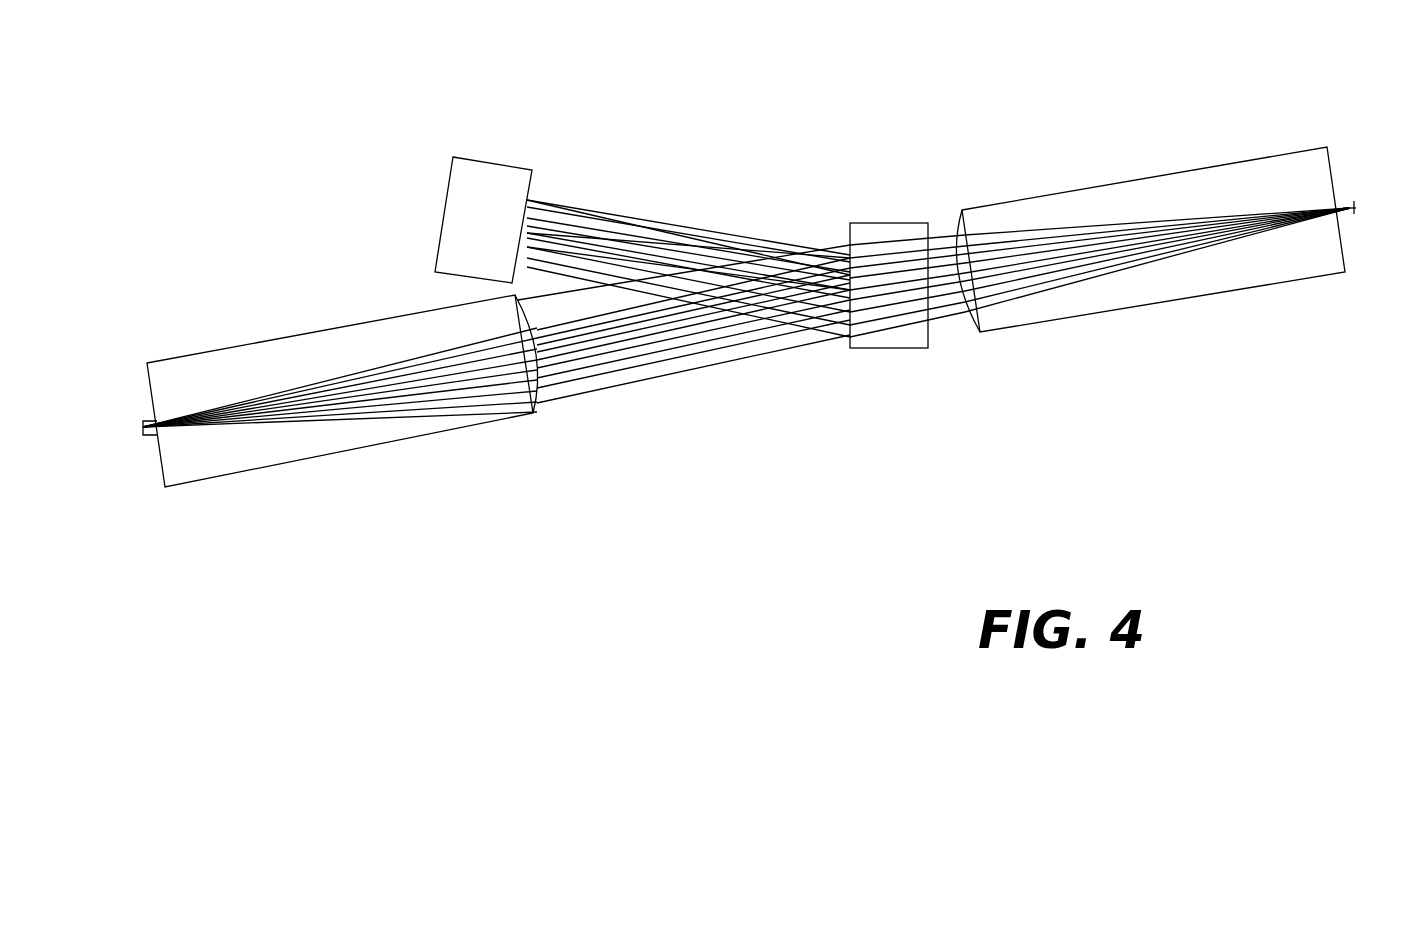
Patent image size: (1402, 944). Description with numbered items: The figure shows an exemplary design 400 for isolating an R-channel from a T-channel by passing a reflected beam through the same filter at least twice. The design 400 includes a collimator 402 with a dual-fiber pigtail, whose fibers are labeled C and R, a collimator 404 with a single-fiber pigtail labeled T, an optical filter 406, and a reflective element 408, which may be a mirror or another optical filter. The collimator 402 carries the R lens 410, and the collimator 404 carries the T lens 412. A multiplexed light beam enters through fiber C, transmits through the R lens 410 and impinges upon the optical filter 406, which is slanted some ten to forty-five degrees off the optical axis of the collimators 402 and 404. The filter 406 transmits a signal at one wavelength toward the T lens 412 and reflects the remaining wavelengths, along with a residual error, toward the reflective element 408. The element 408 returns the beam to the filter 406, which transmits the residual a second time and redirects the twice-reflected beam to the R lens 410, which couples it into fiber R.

The exemplary design 400 is at (747, 266).
The collimator with a dual-fiber pigtail 402 is at (340, 414).
The collimator with a single-fiber pigtail 404 is at (1153, 267).
The optical filter 406 is at (889, 275).
The reflective element 408 is at (454, 204).
The R lens 410 is at (538, 410).
The T lens 412 is at (965, 313).